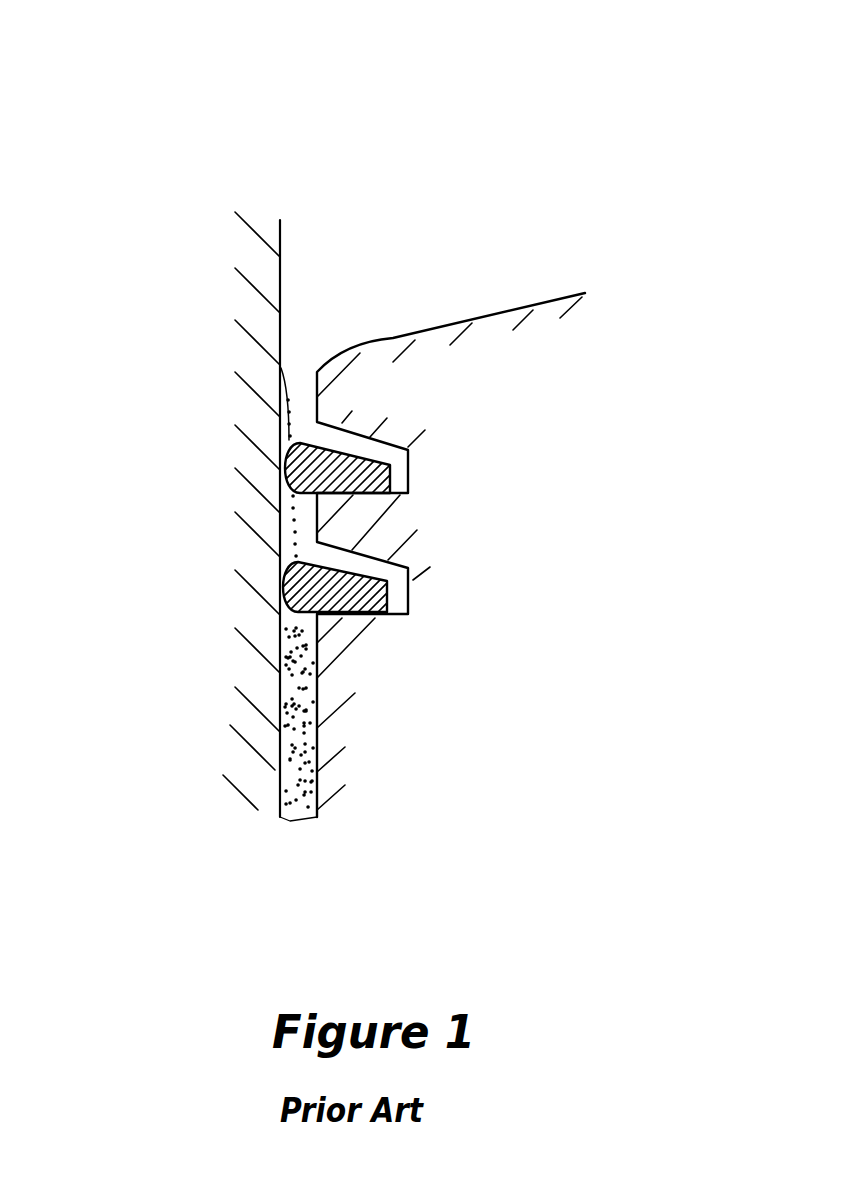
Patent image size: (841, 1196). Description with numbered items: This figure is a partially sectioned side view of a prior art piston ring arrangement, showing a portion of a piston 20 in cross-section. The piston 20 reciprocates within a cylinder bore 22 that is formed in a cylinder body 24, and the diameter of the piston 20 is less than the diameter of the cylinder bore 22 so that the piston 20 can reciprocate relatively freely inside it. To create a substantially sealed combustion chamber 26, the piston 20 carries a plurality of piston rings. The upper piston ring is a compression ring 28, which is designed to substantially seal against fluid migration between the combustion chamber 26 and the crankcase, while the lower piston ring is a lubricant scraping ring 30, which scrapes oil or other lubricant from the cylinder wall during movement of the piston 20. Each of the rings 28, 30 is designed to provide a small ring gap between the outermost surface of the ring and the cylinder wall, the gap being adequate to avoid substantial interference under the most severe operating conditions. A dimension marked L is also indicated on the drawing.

The carrier profile / retaining frame 20 is at (517, 308).
The sliding surface of shaft 22 is at (280, 255).
The housing / shaft body 24 is at (195, 495).
The prior art sealing arrangement 26 is at (438, 228).
The upper sealing lip 28 is at (303, 441).
The lower sealing lip 30 is at (375, 618).
The lubricant L is at (295, 818).